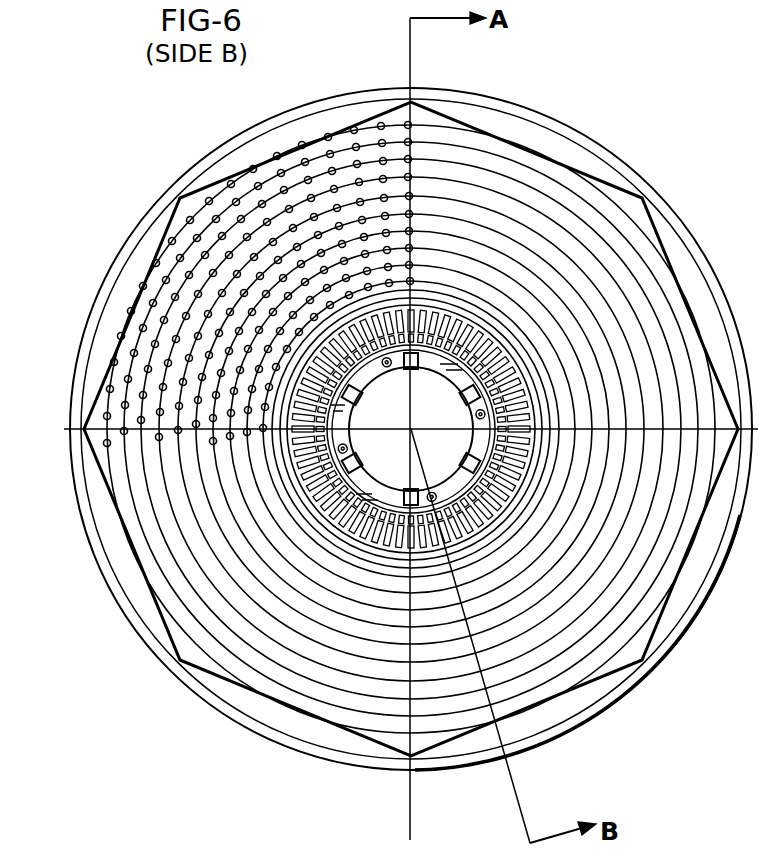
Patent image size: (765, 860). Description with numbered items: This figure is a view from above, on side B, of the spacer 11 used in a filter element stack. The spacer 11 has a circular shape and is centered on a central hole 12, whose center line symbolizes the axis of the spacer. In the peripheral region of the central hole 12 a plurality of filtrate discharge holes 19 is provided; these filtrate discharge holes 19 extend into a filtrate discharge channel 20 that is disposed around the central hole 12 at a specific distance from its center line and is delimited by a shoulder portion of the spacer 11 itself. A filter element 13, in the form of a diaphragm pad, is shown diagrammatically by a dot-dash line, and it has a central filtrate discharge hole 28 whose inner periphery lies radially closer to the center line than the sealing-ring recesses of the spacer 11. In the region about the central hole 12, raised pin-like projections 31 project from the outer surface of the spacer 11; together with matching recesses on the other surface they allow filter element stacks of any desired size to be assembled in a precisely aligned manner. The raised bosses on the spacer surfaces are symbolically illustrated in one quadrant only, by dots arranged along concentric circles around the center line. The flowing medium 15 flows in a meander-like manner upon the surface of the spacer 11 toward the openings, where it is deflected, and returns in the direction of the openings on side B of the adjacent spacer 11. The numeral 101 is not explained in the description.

The spacer 11 is at (584, 132).
The filter element 13 is at (654, 233).
The flowing medium 15 is at (410, 428).
The central hole 12 is at (450, 470).
The filtrate discharge holes 19 is at (474, 396).
The filtrate discharge channel 20 is at (344, 414).
The central filtrate discharge hole 28 is at (443, 366).
The pin-like projections 31 is at (346, 440).
The hub key tab 101 is at (342, 393).